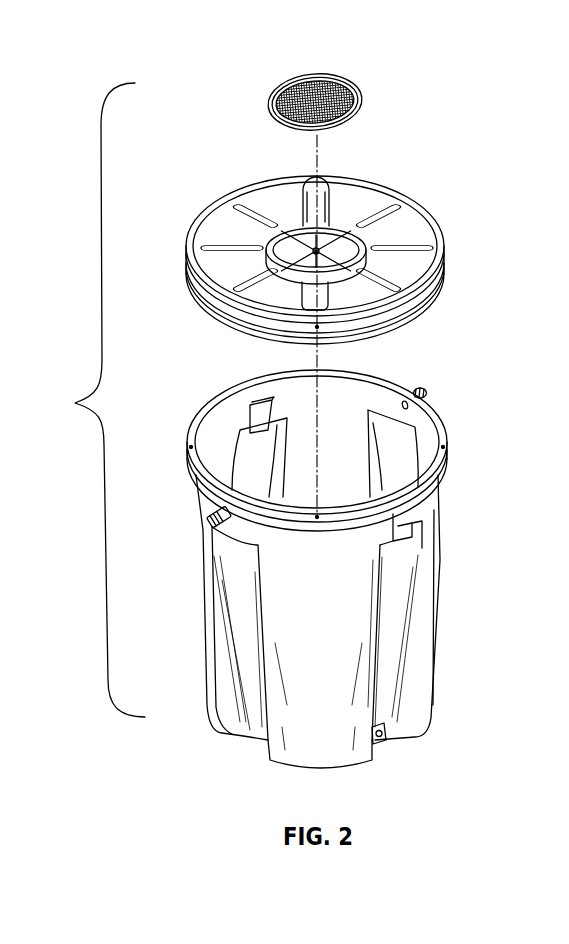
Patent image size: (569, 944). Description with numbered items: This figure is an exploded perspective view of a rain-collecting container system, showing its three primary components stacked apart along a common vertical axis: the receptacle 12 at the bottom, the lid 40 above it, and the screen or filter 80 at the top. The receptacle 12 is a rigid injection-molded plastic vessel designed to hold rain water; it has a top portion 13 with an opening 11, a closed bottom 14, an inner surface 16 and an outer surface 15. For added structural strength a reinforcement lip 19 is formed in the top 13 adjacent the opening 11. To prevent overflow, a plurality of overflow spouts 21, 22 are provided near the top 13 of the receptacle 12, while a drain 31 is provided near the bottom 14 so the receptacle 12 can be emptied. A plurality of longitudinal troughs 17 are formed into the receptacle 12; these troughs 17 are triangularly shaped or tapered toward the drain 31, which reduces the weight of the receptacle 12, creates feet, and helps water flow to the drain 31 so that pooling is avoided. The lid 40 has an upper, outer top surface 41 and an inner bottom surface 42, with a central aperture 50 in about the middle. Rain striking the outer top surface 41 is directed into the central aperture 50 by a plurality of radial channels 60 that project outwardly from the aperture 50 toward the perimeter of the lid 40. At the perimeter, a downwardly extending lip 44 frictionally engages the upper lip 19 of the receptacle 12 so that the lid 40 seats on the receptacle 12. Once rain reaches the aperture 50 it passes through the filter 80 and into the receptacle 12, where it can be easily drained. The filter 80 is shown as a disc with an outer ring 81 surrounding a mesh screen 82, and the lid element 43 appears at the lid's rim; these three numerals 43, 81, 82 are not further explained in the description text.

The opening 11 is at (343, 386).
The receptacle 12 is at (321, 563).
The top portion 13 is at (198, 418).
The closed bottom 14 is at (240, 750).
The outer surface 15 is at (430, 610).
The inner surface 16 is at (422, 448).
The longitudinal troughs 17 is at (213, 656).
The reinforcement lip 19 is at (394, 382).
The overflow spout 21 is at (210, 524).
The overflow spout 22 is at (430, 394).
The drain 31 is at (384, 741).
The lid 40 is at (326, 256).
The outer top surface 41 is at (352, 200).
The inner bottom surface 42 is at (218, 343).
The lid rim 43 is at (443, 255).
The downwardly extending lip 44 is at (426, 318).
The central aperture 50 is at (268, 250).
The radial channels 60 is at (305, 190).
The filter 80 is at (357, 90).
The filter ring 81 is at (341, 90).
The filter screen 82 is at (352, 117).